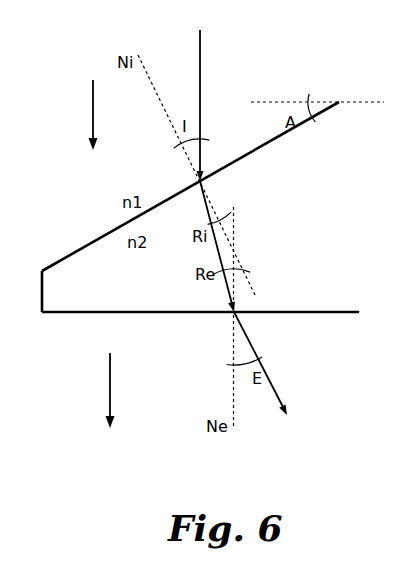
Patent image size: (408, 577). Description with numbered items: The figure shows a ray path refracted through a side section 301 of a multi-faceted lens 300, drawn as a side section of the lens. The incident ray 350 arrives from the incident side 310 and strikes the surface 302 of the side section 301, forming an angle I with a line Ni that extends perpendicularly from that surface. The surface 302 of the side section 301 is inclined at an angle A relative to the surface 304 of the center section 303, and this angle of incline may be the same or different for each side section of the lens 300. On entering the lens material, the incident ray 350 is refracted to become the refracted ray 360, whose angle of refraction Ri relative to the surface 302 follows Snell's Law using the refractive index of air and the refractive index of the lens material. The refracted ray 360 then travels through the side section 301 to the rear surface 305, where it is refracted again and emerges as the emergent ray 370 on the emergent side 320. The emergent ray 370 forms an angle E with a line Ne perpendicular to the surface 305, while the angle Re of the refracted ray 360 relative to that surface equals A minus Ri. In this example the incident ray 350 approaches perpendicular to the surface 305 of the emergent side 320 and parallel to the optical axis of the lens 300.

The multi-faceted lens 300 is at (277, 50).
The side section 301 is at (82, 278).
The surface of the side section 302 is at (100, 238).
The center section 303 is at (322, 202).
The surface of the center section 304 is at (352, 103).
The rear surface 305 is at (308, 313).
The incident side 310 is at (63, 102).
The emergent side 320 is at (81, 382).
The incident ray 350 is at (200, 52).
The refracted ray 360 is at (210, 199).
The emergent ray 370 is at (273, 391).